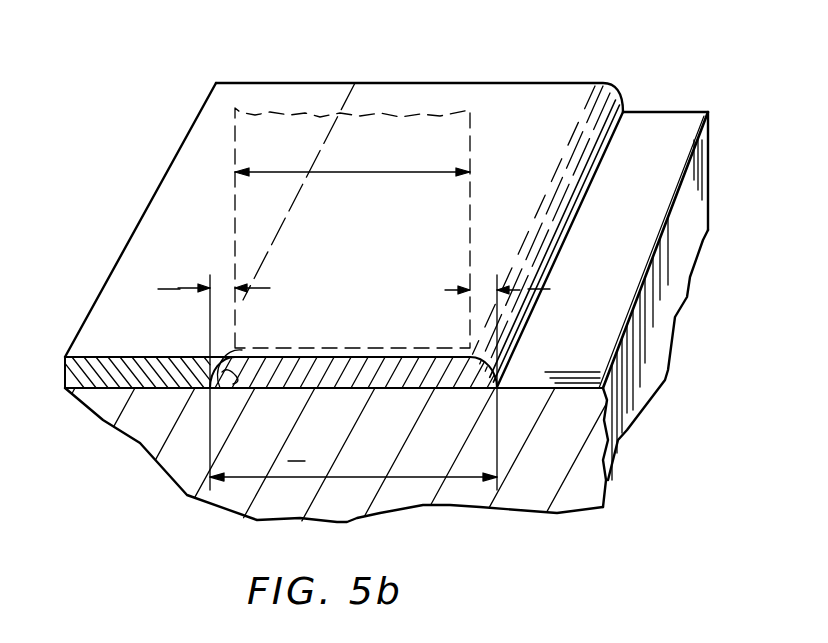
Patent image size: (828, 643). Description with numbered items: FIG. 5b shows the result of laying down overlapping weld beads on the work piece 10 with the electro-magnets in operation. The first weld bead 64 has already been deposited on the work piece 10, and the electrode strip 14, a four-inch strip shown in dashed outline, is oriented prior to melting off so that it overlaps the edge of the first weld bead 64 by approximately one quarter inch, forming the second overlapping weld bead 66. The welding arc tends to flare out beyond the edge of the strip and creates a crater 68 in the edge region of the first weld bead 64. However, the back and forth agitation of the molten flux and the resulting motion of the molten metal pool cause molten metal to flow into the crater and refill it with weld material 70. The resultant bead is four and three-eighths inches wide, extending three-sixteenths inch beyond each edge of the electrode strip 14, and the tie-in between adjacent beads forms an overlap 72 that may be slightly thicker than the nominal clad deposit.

The work piece 10 is at (663, 113).
The electrode strip 14 is at (233, 150).
The first weld bead 64 is at (100, 305).
The second overlapping weld bead 66 is at (536, 214).
The crater 68 is at (152, 448).
The weld material 70 is at (228, 366).
The overlap 72 is at (246, 356).